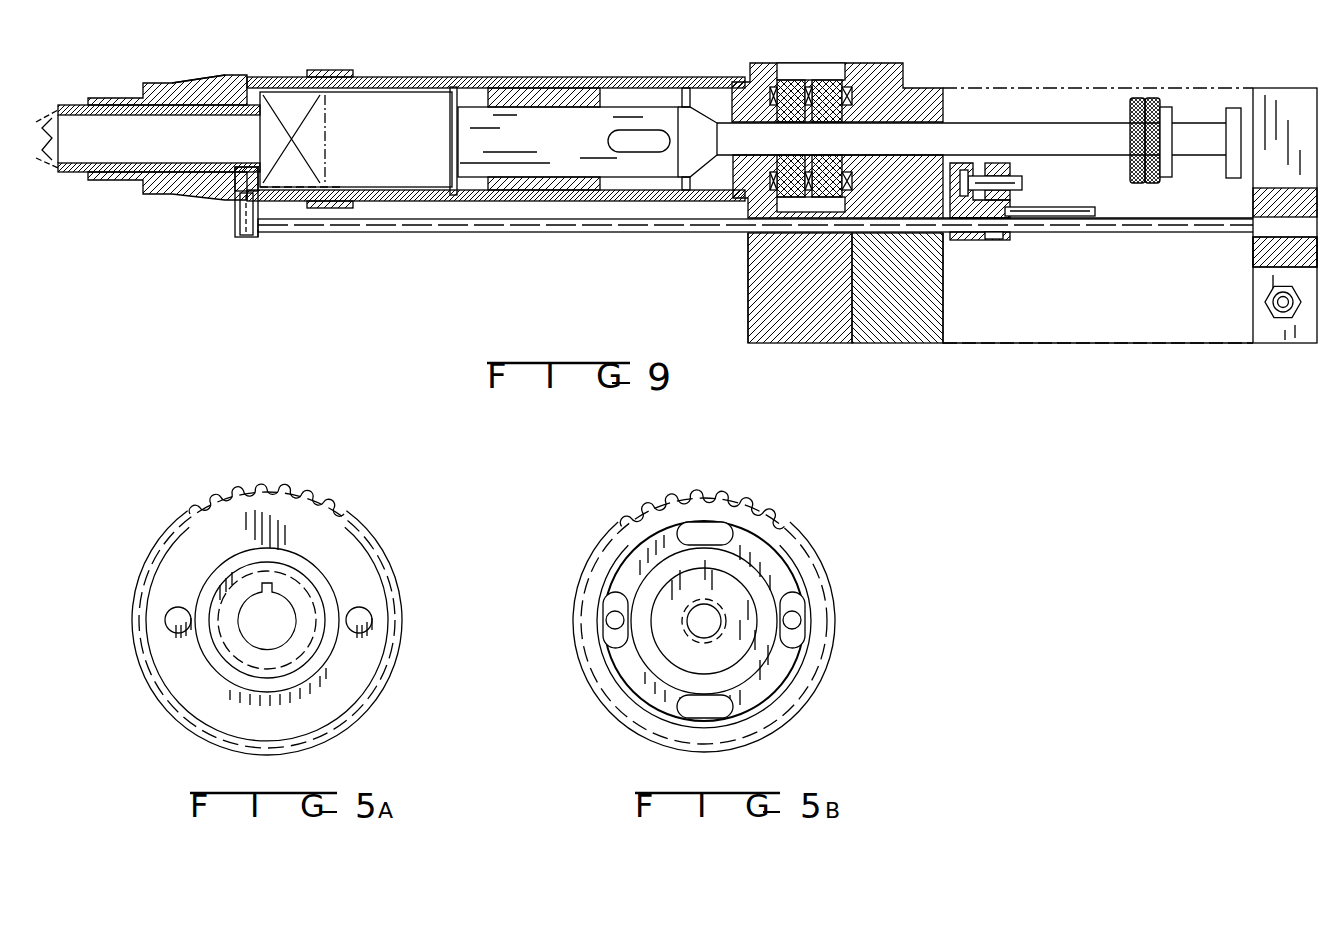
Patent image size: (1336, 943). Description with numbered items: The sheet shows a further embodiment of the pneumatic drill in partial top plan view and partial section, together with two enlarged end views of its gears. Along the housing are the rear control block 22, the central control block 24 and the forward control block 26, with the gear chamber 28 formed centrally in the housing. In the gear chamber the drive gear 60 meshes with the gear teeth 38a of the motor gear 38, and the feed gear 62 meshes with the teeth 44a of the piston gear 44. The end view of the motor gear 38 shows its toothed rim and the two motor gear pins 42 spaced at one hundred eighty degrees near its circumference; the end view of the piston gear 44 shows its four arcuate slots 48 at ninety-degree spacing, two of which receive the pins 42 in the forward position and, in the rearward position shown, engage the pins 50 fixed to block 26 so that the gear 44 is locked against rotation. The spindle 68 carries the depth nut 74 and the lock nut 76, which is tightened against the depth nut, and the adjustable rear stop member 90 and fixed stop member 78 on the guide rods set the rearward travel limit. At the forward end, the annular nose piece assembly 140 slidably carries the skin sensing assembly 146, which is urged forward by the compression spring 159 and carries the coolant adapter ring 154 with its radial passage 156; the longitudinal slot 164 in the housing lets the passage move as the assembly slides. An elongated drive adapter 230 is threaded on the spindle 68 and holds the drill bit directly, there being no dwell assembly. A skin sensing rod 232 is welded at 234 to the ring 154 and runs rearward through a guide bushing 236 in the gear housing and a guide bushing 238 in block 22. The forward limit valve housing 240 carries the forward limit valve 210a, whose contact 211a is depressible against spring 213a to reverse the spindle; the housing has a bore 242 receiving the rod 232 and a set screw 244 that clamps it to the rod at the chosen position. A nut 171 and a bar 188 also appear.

In FIG. 9, the rear control block 22 is at (1288, 88).
In FIG. 9, the central control block 24 is at (1050, 345).
In FIG. 9, the forward control block 26 is at (902, 345).
In FIG. 9, the gear chamber 28 is at (806, 345).
In FIG. 5A, the motor gear 38 is at (365, 525).
In FIG. 5A, the gear teeth 38a is at (310, 497).
In FIG. 5A, the motor gear pins 42 is at (170, 607).
In FIG. 5B, the piston gear 44 is at (808, 531).
In FIG. 5B, the teeth 44a is at (750, 500).
In FIG. 5B, the arcuate slots 48 is at (690, 526).
In FIG. 5B, the pins 50 is at (610, 618).
In FIG. 9, the drive gear 60 is at (790, 80).
In FIG. 9, the feed gear 62 is at (833, 80).
In FIG. 9, the spindle 68 is at (1033, 120).
In FIG. 9, the depth nut 74 is at (1133, 98).
In FIG. 9, the lock nut 76 is at (1151, 98).
In FIG. 9, the fixed stop member 78 is at (1234, 108).
In FIG. 9, the adjustable rear stop member 90 is at (1167, 107).
In FIG. 9, the annular nose piece assembly 140 is at (193, 76).
In FIG. 9, the skin sensing assembly 146 is at (75, 170).
In FIG. 9, the coolant adapter ring 154 is at (246, 90).
In FIG. 9, the radial passage 156 is at (238, 228).
In FIG. 9, the compression spring 159 is at (316, 119).
In FIG. 9, the longitudinal slot 164 is at (66, 117).
In FIG. 9, the nut 171 is at (1265, 300).
In FIG. 9, the bar 188 is at (1078, 208).
In FIG. 9, the forward limit valve 210a is at (996, 170).
In FIG. 9, the contact 211a is at (1024, 182).
In FIG. 9, the spring 213a is at (970, 163).
In FIG. 9, the drive adapter 230 is at (578, 112).
In FIG. 9, the skin sensing rod 232 is at (496, 232).
In FIG. 9, the weld 234 is at (260, 237).
In FIG. 9, the guide bushing 236 is at (748, 257).
In FIG. 9, the guide bushing 238 is at (1266, 248).
In FIG. 9, the forward limit valve housing 240 is at (992, 242).
In FIG. 9, the bore 242 is at (1012, 236).
In FIG. 9, the set screw 244 is at (987, 238).